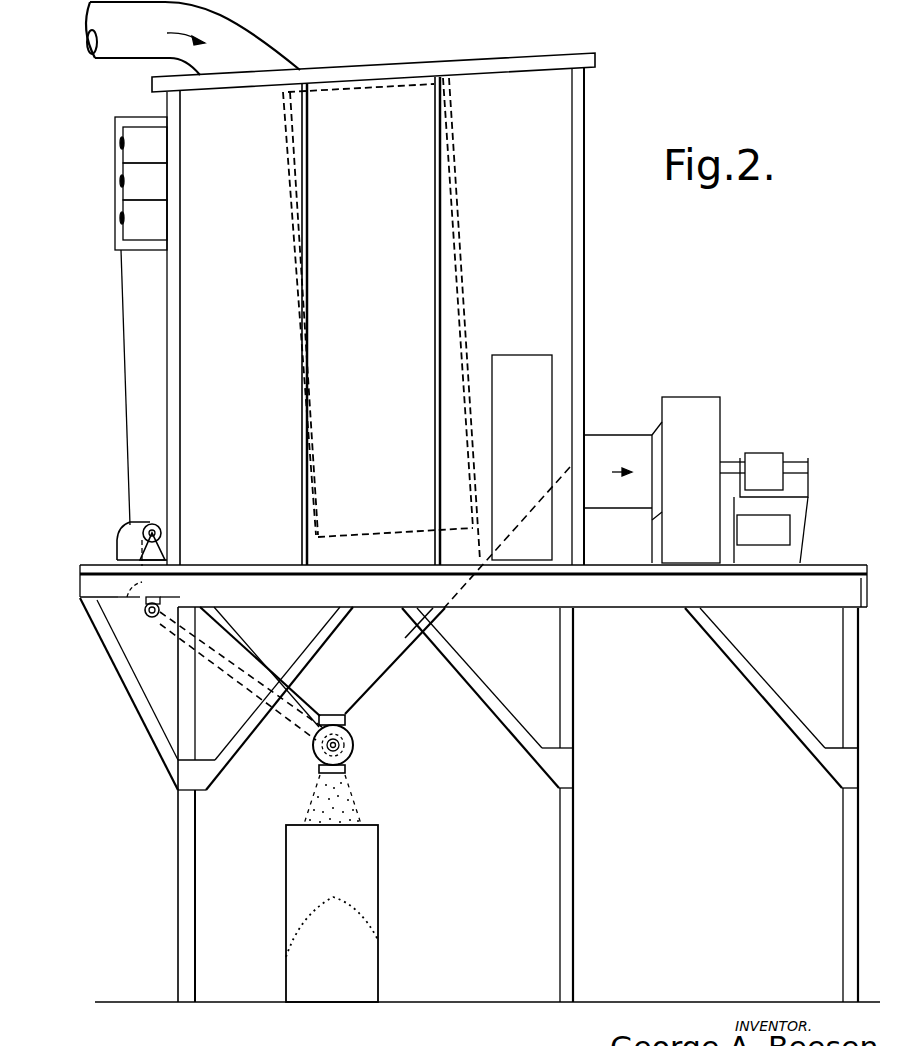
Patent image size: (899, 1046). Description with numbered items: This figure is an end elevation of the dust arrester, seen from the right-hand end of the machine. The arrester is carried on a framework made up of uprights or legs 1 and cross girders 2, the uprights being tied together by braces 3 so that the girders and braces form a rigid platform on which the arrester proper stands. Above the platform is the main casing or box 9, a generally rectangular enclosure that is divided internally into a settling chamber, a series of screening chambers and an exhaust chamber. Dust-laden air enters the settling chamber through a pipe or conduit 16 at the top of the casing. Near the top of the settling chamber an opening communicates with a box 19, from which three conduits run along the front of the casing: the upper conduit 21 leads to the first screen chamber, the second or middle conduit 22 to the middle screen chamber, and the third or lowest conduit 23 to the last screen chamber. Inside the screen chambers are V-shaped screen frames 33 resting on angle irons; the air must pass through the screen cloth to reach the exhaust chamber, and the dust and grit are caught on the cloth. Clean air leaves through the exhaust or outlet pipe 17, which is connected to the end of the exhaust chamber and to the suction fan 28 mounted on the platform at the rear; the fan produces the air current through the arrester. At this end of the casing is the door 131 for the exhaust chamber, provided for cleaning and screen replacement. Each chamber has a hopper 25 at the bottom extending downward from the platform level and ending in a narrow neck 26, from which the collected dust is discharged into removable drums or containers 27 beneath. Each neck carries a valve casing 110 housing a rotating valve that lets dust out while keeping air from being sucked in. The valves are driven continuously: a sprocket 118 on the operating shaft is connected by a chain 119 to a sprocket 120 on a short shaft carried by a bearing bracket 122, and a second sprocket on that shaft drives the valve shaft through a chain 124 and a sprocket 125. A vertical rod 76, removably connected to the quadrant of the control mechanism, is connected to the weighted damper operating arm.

The uprights or legs 1 is at (186, 848).
The cross girders 2 is at (648, 604).
The braces 3 is at (243, 737).
The main casing or box 9 is at (580, 280).
The pipe or conduit 16 is at (254, 41).
The exhaust or outlet pipe 17 is at (618, 442).
The box 19 is at (161, 196).
The upper conduit 21 is at (155, 143).
The second or middle conduit 22 is at (160, 181).
The third or lowest conduit 23 is at (158, 217).
The hopper 25 is at (383, 670).
The narrow neck 26 is at (344, 765).
The drums or containers 27 is at (285, 902).
The suction fan 28 is at (718, 425).
The screen frames 33 is at (288, 200).
The rod 76 is at (128, 325).
The valve casing 110 is at (317, 760).
The sprocket 118 is at (152, 522).
The chain 119 is at (126, 603).
The sprocket 120 is at (153, 620).
The bearing bracket 122 is at (158, 598).
The chain 124 is at (246, 689).
The sprocket 125 is at (355, 745).
The door 131 is at (527, 355).